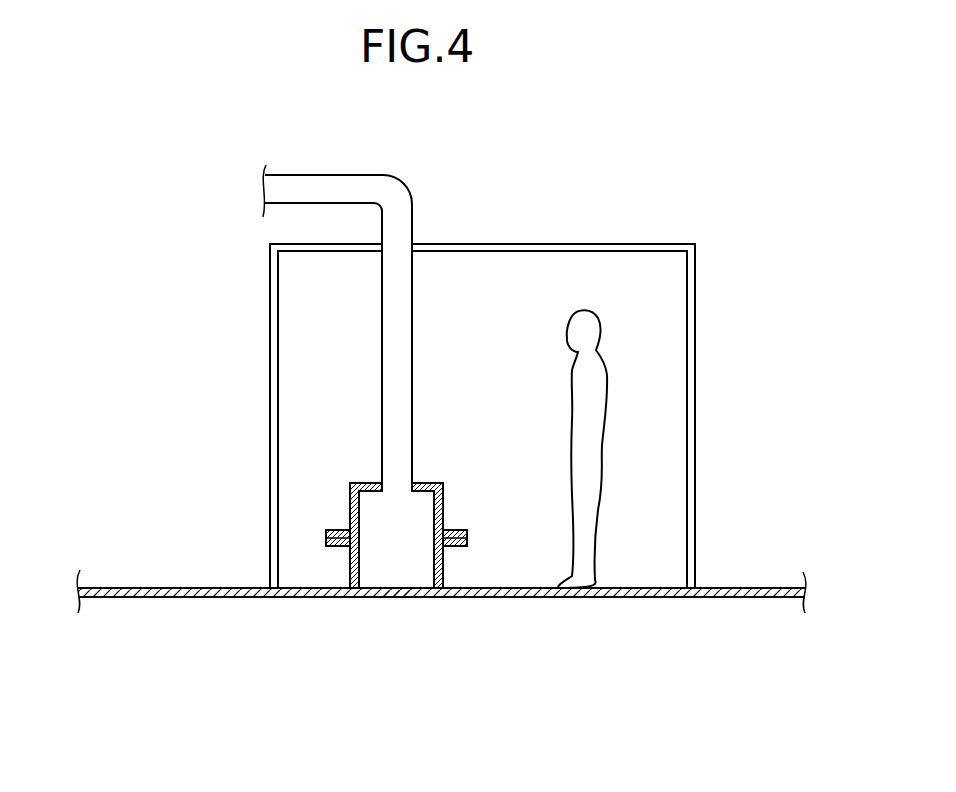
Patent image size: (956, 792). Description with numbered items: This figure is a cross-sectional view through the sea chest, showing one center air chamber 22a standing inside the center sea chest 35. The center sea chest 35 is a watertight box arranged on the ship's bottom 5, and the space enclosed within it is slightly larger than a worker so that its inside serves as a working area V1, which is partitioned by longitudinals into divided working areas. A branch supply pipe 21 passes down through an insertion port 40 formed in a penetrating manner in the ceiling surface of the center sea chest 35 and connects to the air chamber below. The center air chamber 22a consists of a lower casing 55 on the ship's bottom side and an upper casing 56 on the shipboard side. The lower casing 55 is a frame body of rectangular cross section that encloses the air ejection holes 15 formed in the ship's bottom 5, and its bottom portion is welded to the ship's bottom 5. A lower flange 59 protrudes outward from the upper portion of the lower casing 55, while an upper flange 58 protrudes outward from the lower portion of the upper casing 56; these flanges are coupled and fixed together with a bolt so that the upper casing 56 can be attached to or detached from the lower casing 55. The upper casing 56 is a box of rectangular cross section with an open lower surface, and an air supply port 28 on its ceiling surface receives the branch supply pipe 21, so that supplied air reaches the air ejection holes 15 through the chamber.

The ship's bottom 5 is at (441, 632).
The air ejection holes 15 is at (395, 597).
The branch supply pipe 21 is at (397, 312).
The center air chamber 22a is at (322, 553).
The air supply port 28 is at (410, 488).
The center sea chest 35 is at (270, 290).
The insertion port 40 is at (408, 246).
The lower casing 55 is at (350, 563).
The upper casing 56 is at (350, 510).
The upper flange 58 is at (456, 529).
The lower flange 59 is at (460, 547).
The working area V1 is at (619, 266).